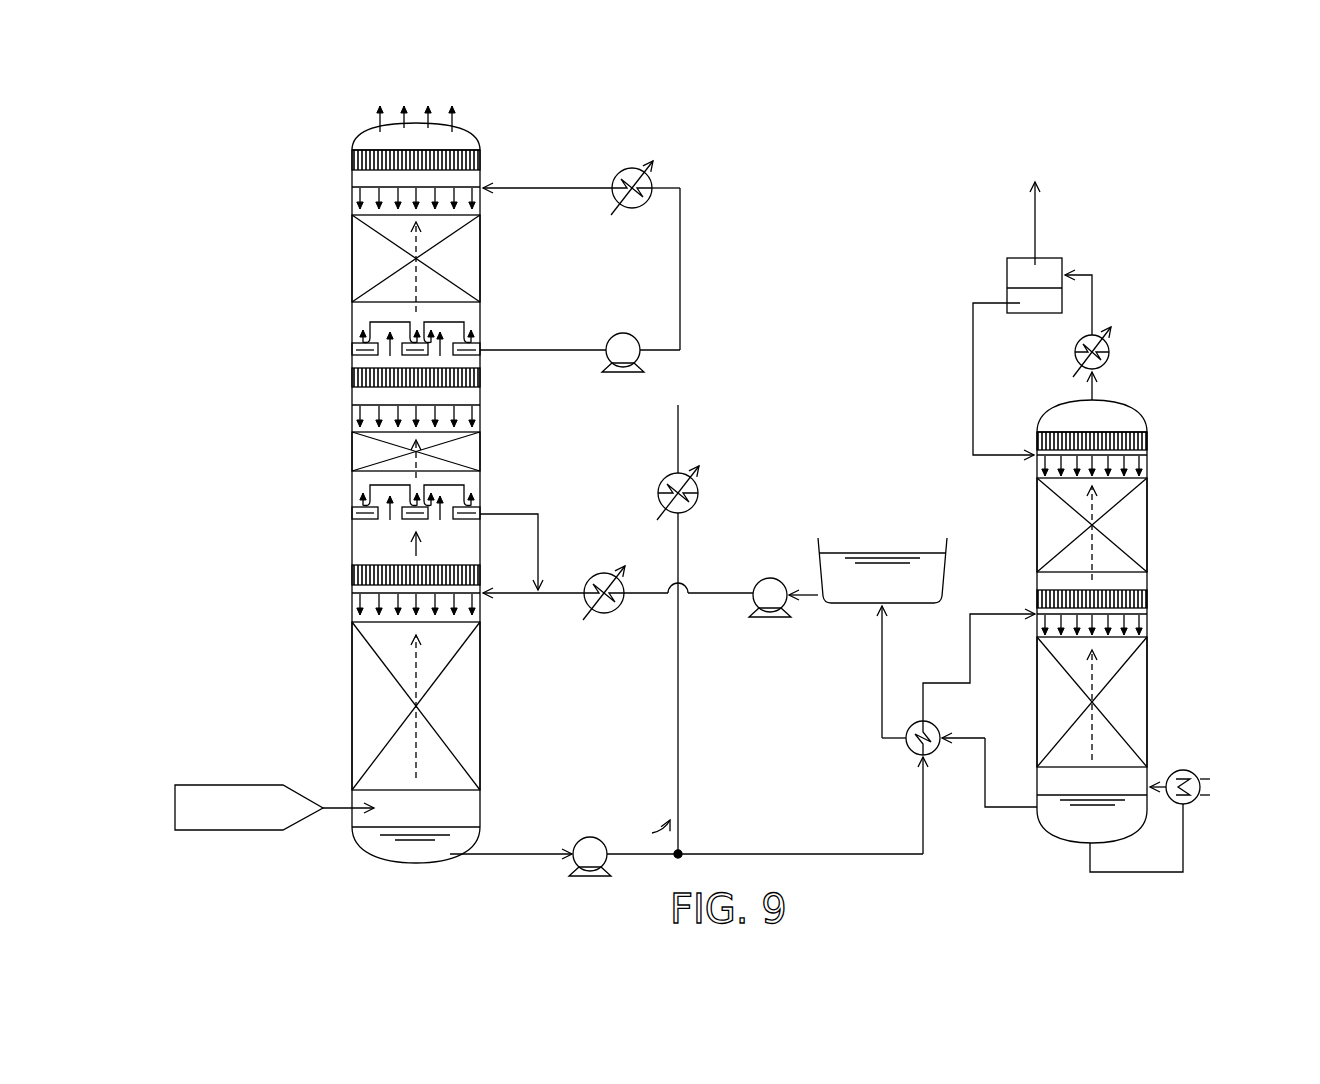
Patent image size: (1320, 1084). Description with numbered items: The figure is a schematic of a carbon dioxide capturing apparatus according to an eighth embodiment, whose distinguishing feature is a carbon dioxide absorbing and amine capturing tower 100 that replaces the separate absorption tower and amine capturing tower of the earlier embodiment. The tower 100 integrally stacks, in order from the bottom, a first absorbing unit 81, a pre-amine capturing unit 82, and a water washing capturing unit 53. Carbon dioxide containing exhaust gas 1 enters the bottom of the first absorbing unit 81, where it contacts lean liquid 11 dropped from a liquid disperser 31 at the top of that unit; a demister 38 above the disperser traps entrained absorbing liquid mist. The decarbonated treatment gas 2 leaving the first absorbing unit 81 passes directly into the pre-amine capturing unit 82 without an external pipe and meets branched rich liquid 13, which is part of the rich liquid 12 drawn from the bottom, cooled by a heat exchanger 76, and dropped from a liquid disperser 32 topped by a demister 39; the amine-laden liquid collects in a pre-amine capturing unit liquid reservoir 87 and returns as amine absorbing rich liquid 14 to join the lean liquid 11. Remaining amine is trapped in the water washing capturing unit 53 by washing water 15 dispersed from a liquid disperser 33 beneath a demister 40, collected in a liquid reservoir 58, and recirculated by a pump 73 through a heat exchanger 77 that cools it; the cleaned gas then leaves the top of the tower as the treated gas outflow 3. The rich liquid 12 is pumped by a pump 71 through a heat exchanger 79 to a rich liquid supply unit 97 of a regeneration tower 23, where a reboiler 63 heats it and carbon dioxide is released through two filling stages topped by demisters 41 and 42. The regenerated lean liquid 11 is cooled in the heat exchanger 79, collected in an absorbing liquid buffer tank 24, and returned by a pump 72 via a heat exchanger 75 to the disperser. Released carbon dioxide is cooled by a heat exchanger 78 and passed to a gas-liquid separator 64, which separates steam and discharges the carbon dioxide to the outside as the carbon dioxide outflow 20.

The carbon dioxide absorbing and amine capturing tower 100 is at (268, 210).
The carbon dioxide containing exhaust gas 1 is at (232, 785).
The decarbonated treatment gas 2 is at (412, 545).
The treated gas outlet 3 is at (375, 118).
The lean liquid 11 is at (510, 600).
The rich liquid 12 is at (518, 852).
The branched rich liquid 13 is at (678, 706).
The amine absorbing rich liquid 14 is at (538, 548).
The washing water 15 is at (680, 275).
The recovered gas outlet 20 is at (1035, 207).
The regeneration tower 23 is at (1162, 505).
The absorbing liquid buffer tank 24 is at (880, 597).
The liquid disperser 31 is at (352, 597).
The liquid disperser 32 is at (352, 410).
The liquid disperser 33 is at (352, 187).
The demister 38 is at (352, 572).
The demister 39 is at (352, 377).
The demister 40 is at (352, 160).
The demister 41 is at (1037, 600).
The demister 42 is at (1147, 442).
The water washing capturing unit 53 is at (360, 262).
The liquid reservoir 58 is at (355, 345).
The reboiler 63 is at (1183, 770).
The gas-liquid separator 64 is at (1004, 278).
The pump 71 is at (590, 838).
The pump 72 is at (770, 578).
The pump 73 is at (623, 333).
The heat exchanger 75 is at (604, 614).
The heat exchanger 76 is at (700, 493).
The heat exchanger 77 is at (632, 168).
The heat exchanger 78 is at (1110, 352).
The heat exchanger 79 is at (938, 725).
The first absorbing unit 81 is at (360, 700).
The pre-amine capturing unit 82 is at (360, 453).
The pre-amine capturing unit liquid reservoir 87 is at (482, 518).
The rich liquid supply unit 97 is at (1147, 622).